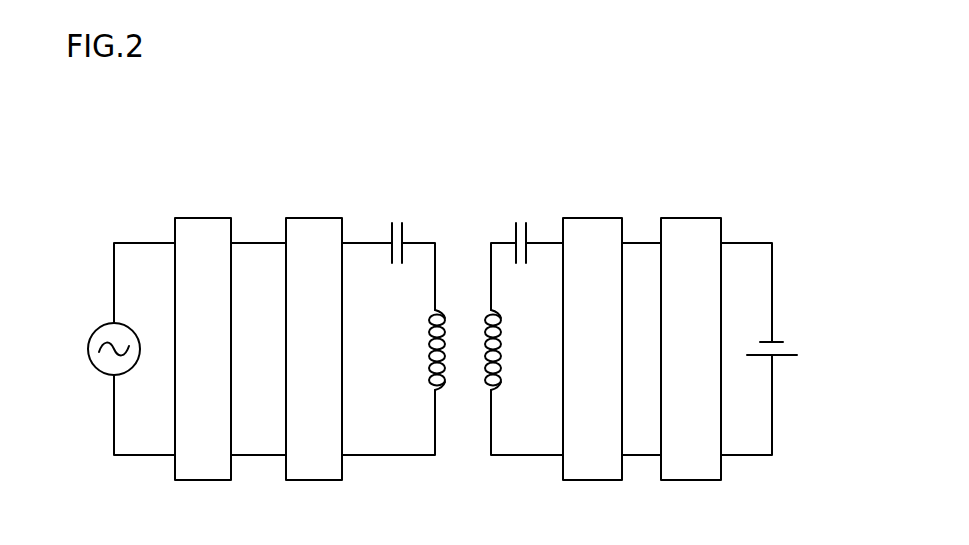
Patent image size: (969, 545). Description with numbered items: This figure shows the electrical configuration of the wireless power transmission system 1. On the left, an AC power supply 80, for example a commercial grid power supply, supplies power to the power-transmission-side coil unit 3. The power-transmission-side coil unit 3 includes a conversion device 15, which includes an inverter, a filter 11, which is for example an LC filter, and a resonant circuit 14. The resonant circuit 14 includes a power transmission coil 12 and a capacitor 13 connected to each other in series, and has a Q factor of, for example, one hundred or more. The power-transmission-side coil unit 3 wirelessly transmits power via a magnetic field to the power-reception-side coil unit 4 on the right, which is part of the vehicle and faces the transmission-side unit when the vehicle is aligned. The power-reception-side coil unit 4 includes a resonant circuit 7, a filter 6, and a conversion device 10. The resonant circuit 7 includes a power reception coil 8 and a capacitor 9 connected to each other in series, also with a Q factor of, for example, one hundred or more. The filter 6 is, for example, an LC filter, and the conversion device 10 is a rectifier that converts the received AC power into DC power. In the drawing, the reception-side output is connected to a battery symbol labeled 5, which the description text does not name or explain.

The wireless power transmission system 1 is at (487, 102).
The power-transmission-side coil unit 3 is at (402, 116).
The power-reception-side coil unit 4 is at (783, 116).
The battery 5 is at (774, 342).
The filter 6 is at (603, 218).
The resonant circuit 7 is at (553, 163).
The power reception coil 8 is at (486, 323).
The capacitor 9 is at (528, 233).
The conversion device 10 is at (693, 218).
The filter 11 is at (303, 218).
The power transmission coil 12 is at (444, 323).
The capacitor 13 is at (390, 233).
The resonant circuit 14 is at (458, 163).
The conversion device 15 is at (202, 218).
The AC power supply 80 is at (89, 350).